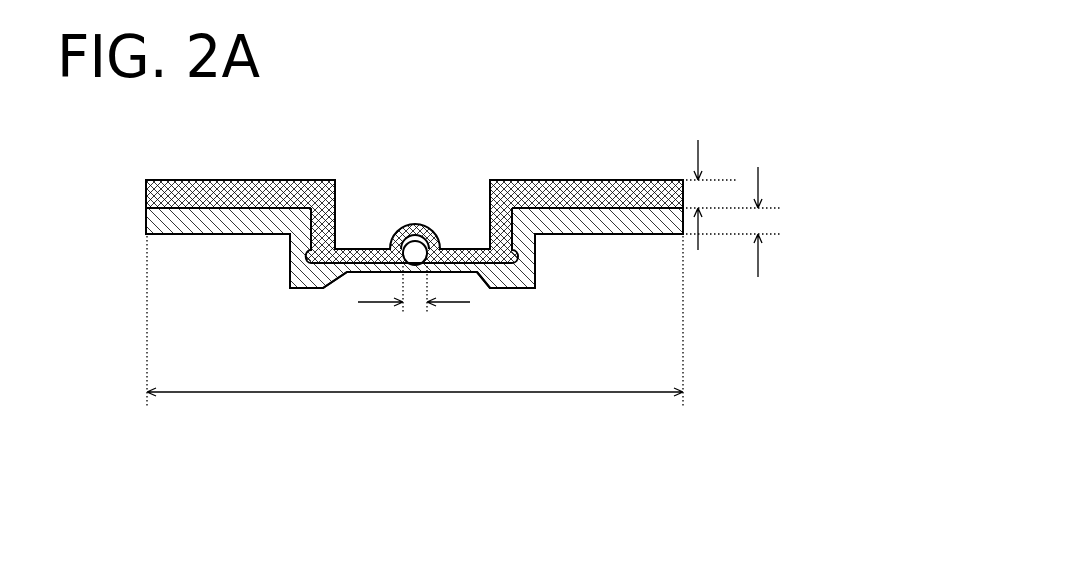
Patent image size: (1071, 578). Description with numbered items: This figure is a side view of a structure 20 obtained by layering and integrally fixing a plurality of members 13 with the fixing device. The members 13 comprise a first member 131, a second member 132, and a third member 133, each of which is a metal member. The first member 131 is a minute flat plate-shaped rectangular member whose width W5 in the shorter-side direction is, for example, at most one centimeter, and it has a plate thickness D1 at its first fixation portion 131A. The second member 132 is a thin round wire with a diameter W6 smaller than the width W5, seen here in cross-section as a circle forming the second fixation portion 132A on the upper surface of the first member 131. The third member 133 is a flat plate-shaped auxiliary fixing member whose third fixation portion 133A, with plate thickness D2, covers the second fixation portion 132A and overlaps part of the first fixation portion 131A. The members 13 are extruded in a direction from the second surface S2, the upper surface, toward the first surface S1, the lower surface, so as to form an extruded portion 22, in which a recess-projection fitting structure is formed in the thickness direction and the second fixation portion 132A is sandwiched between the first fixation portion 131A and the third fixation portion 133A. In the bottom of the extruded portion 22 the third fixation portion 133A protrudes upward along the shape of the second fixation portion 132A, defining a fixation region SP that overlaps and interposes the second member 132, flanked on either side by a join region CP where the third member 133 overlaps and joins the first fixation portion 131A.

The structure 20 is at (738, 85).
The members 13 is at (603, 105).
The first member 131 is at (552, 212).
The second member 132 is at (413, 227).
The second fixation portion 132A is at (431, 243).
The third member 133 is at (500, 180).
The first fixation portion 131A is at (327, 290).
The third fixation portion 133A is at (367, 273).
The extruded portion 22 is at (545, 282).
The join region CP is at (367, 249).
The fixation region SP is at (399, 223).
The first surface S1 is at (201, 249).
The second surface S2 is at (223, 164).
The plate thickness of the first fixation portion D1 is at (742, 222).
The plate thickness of the third fixation portion D2 is at (734, 195).
The width of the first member W5 is at (415, 321).
The diameter of the second member W6 is at (417, 298).